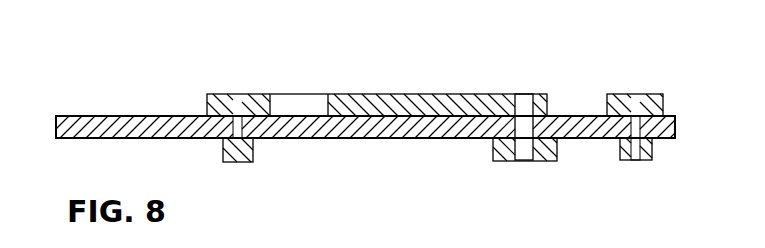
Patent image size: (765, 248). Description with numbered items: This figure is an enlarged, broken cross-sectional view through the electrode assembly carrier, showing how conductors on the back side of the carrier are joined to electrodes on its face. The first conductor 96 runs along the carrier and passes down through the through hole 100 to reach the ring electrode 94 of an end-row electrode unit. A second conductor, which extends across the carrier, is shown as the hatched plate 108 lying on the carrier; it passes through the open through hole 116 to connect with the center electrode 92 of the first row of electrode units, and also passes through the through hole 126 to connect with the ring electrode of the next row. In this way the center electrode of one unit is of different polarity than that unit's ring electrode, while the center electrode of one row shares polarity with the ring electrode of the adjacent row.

The center electrode 92 is at (497, 162).
The ring electrode 94 is at (622, 152).
The first conductor 96 is at (645, 94).
The through hole 100 is at (636, 152).
The plate 108 is at (392, 94).
The open through hole 116 is at (527, 94).
The through hole 126 is at (237, 116).